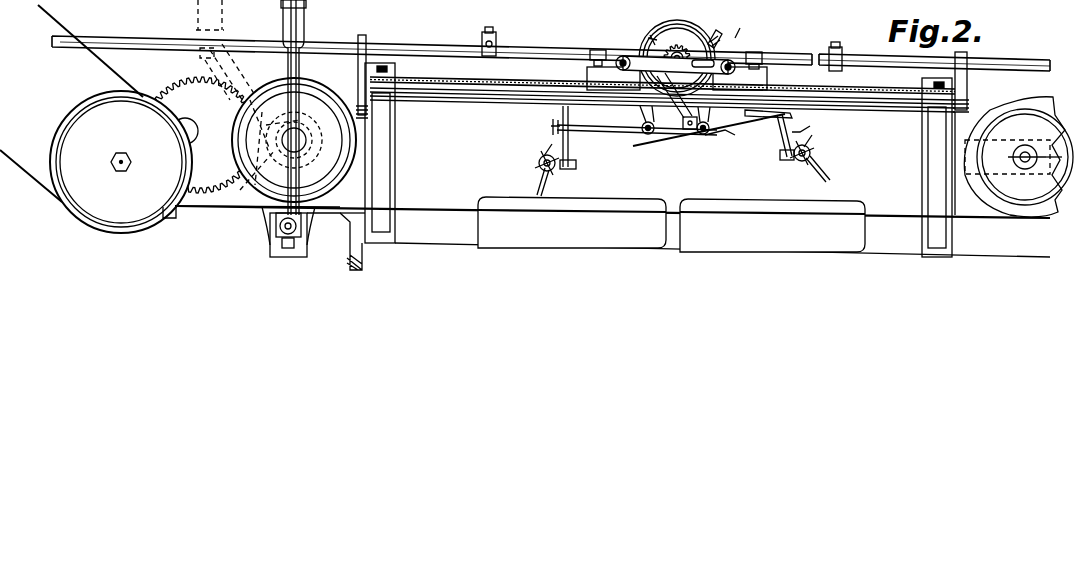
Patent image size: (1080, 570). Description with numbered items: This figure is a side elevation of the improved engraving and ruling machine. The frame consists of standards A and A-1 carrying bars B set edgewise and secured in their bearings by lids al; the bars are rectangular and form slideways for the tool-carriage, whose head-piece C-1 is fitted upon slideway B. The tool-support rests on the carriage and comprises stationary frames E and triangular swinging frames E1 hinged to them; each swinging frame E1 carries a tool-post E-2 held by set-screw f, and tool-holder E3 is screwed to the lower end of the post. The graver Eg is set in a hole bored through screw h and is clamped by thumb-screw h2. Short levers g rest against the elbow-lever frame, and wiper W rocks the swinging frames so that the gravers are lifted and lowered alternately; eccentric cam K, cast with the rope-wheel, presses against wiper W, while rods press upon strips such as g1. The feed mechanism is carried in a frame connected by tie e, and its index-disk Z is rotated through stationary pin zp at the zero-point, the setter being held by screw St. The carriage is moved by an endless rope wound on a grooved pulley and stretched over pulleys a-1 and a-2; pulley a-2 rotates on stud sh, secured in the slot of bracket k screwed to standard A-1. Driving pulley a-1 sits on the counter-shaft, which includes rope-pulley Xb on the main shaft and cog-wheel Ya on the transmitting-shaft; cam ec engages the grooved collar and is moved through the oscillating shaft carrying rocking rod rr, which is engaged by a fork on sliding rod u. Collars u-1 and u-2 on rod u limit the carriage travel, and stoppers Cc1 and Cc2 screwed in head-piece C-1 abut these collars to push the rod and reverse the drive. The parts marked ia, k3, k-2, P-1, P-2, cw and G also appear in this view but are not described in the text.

The rope-pulley Xb is at (96, 119).
The cog-wheel Ya is at (200, 135).
The grooved pulley a-1 is at (312, 146).
The rocking rod rr is at (302, 46).
The rod head ia is at (304, 5).
The cam ec is at (270, 247).
The standard A is at (386, 156).
The bar k3 is at (366, 40).
The sliding rod u is at (528, 48).
The collar u-1 is at (482, 38).
The collar u-2 is at (842, 56).
The lid al is at (395, 73).
The bar B is at (877, 108).
The standard A-1 is at (940, 150).
The bar k-2 is at (967, 90).
The bracket k is at (956, 180).
The plate P-1 is at (572, 222).
The plate P-2 is at (772, 225).
The grooved pulley a-2 is at (1018, 157).
The shaft sh is at (1063, 157).
The head-piece C-1 is at (740, 78).
The eccentric cam K is at (677, 28).
The index-disk Z is at (690, 38).
The cog wheel cw is at (677, 67).
The tie e is at (622, 56).
The stationary pin zp is at (651, 34).
The screw St is at (718, 32).
The guide G is at (740, 30).
The stopper Cc2 is at (598, 50).
The stopper Cc1 is at (754, 52).
The strip g1 is at (690, 130).
The wiper W is at (640, 112).
The set-screw f is at (551, 126).
The tool-post E-2 is at (570, 150).
The short lever g is at (668, 140).
The swinging frame E1 is at (628, 138).
The stationary frame E is at (720, 147).
The tool-holder E3 is at (813, 127).
The screw h is at (810, 153).
The thumb-screw h2 is at (665, 161).
The graver Eg is at (548, 186).